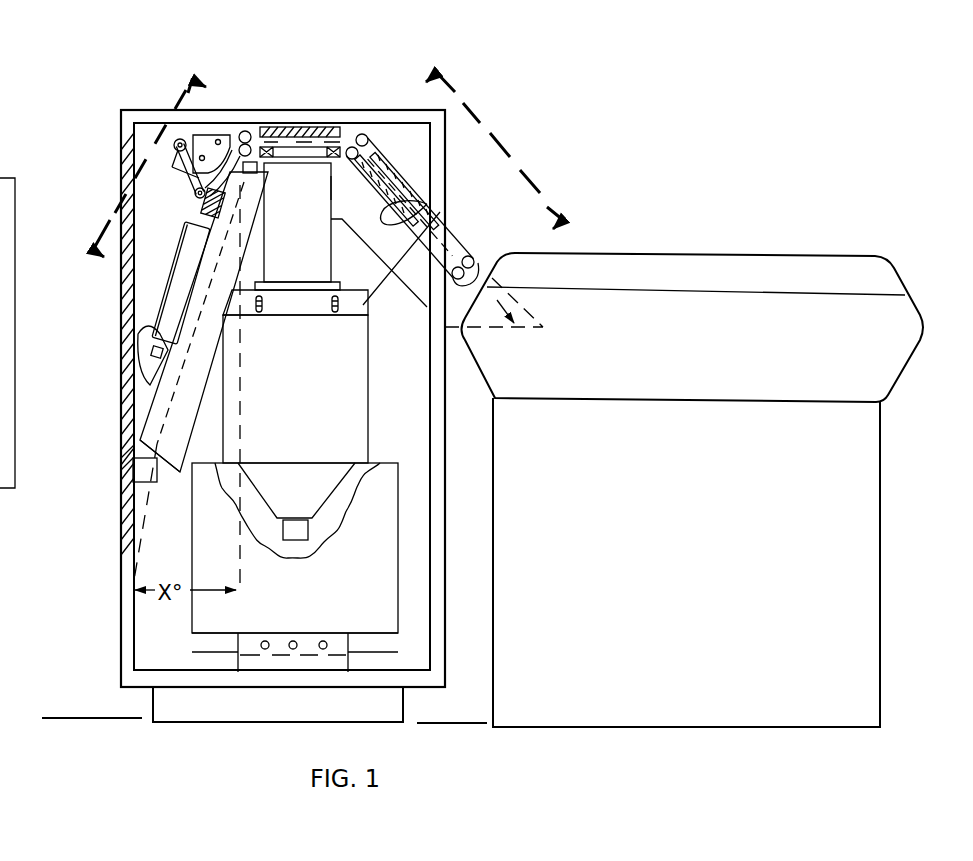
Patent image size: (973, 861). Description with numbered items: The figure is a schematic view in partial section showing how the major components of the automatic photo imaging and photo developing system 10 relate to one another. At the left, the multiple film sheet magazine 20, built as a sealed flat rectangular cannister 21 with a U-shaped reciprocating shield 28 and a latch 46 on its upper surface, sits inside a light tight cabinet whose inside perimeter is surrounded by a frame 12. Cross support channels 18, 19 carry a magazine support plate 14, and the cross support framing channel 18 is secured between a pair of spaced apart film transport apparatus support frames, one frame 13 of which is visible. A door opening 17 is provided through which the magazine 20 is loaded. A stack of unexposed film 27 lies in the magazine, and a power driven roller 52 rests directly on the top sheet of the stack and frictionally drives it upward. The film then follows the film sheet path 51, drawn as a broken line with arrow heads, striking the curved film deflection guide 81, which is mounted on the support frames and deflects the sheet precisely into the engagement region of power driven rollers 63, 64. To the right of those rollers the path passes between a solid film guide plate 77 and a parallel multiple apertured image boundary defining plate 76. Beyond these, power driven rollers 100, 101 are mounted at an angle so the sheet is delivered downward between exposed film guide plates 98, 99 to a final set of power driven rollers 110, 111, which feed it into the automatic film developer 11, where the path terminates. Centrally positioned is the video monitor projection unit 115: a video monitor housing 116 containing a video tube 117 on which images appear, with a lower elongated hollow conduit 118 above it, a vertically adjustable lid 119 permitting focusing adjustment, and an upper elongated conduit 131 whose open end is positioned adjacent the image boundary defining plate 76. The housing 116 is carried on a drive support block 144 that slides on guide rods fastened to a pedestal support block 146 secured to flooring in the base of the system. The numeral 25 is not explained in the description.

The automatic photo imaging and photo developing system 10 is at (414, 70).
The automatic film developer 11 is at (708, 244).
The frame 12 is at (140, 112).
The film transport apparatus support frame 13 is at (411, 318).
The magazine support plate 14 is at (172, 462).
The door opening 17 is at (126, 451).
The cross support framing channel 18 is at (259, 162).
The cross support channel 19 is at (136, 477).
The multiple film sheet magazine 20 is at (162, 280).
The cannister 21 is at (150, 412).
The cabinet body 25 is at (882, 486).
The stack of unexposed film 27 is at (204, 207).
The U-shaped reciprocating shield 28 is at (166, 310).
The latch 46 is at (137, 333).
The film sheet path 51 is at (334, 146).
The power driven roller 52 is at (195, 192).
The power driven roller 63 is at (250, 131).
The power driven roller 64 is at (223, 134).
The multiple apertured image boundary defining plate 76 is at (346, 139).
The solid film guide plate 77 is at (303, 126).
The film deflection guide 81 is at (178, 139).
The exposed film guide plate 98 is at (365, 162).
The exposed film guide plate 99 is at (334, 186).
The power driven roller 100 is at (388, 139).
The power driven roller 101 is at (370, 150).
The power driven roller 110 is at (471, 256).
The power driven roller 111 is at (483, 270).
The video monitor projection unit 115 is at (407, 441).
The video monitor housing 116 is at (399, 538).
The video tube 117 is at (354, 480).
The lower elongated hollow conduit 118 is at (369, 450).
The vertically adjustable lid 119 is at (446, 213).
The upper elongated conduit 131 is at (365, 175).
The drive support block 144 is at (394, 648).
The pedestal support block 146 is at (350, 660).